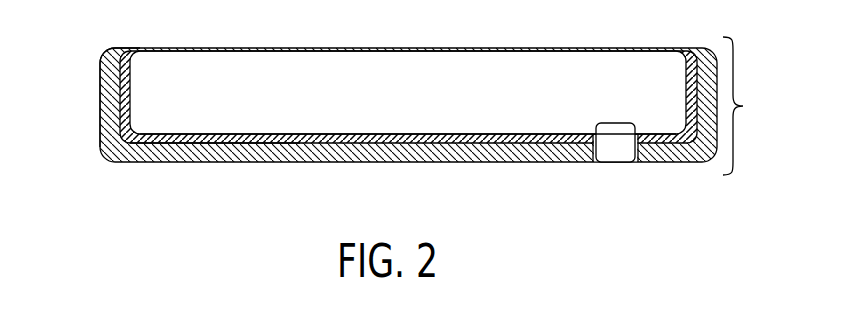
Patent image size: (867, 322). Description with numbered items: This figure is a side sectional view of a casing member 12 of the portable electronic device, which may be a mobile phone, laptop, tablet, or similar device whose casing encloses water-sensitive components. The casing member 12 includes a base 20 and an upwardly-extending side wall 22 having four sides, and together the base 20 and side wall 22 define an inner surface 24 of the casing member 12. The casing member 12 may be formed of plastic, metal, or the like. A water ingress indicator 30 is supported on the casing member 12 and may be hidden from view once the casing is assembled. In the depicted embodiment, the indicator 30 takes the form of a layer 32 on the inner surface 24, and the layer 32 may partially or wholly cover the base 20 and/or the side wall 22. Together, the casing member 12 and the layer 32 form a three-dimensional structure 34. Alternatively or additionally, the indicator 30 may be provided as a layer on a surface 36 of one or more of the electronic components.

The casing member 12 is at (108, 52).
The base 20 is at (351, 162).
The side wall 22 is at (102, 109).
The inner surface 24 is at (565, 135).
The water ingress indicator 30 is at (321, 134).
The layer 32 is at (272, 143).
The 3-dimensional structure 34 is at (217, 121).
The surface 36 is at (188, 143).